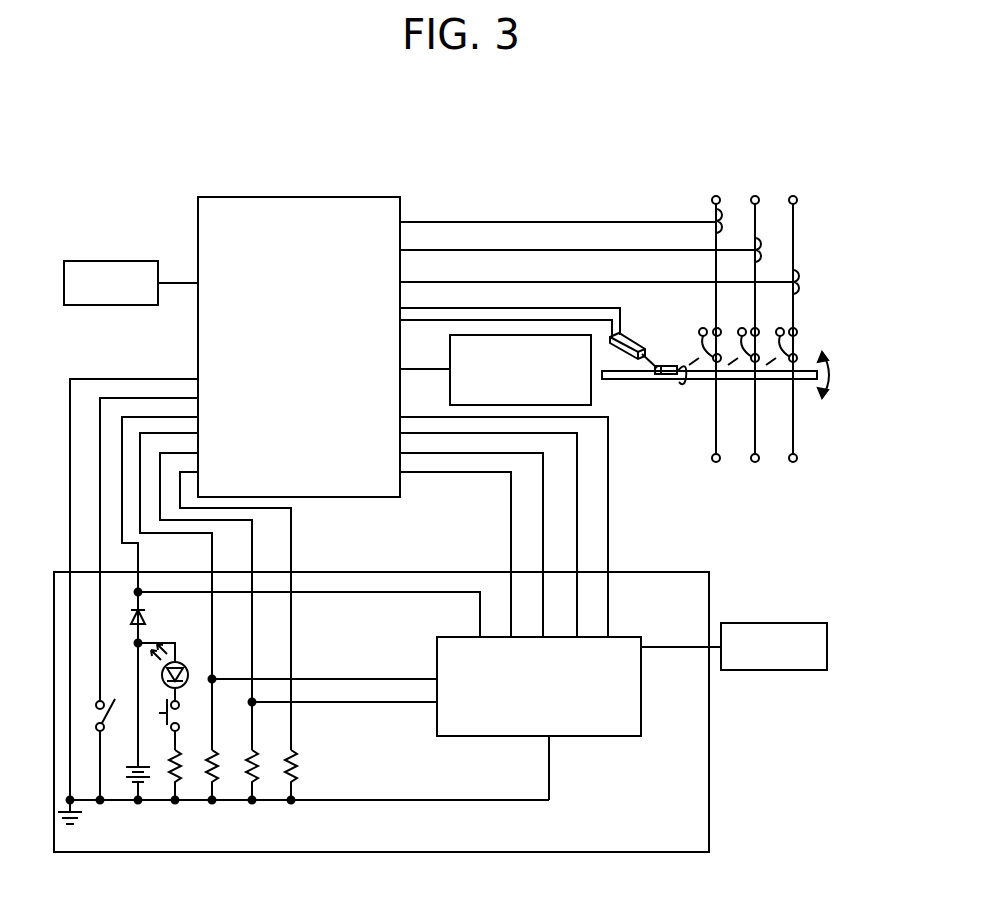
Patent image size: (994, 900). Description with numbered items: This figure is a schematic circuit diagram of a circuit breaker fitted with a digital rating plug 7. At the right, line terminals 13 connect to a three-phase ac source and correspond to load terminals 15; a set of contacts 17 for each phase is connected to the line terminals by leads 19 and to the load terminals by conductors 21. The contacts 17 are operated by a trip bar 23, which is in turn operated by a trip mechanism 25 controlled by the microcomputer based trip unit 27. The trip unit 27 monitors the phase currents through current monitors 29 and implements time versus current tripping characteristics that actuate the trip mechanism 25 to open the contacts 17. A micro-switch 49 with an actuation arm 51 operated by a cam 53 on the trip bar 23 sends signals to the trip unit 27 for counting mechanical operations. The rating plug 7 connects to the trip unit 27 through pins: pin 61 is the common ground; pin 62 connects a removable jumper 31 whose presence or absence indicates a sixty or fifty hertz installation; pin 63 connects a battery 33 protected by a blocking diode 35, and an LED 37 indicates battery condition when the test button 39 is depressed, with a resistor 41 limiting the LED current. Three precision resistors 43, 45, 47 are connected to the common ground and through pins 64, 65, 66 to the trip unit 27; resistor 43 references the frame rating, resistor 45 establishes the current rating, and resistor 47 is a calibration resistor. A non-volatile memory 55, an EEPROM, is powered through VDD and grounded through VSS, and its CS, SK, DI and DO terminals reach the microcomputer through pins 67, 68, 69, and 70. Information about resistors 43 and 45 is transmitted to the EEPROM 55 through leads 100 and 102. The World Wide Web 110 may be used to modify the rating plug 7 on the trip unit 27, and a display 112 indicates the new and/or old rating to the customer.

The rating plug 7 is at (709, 746).
The line terminals 13 is at (793, 196).
The load terminals 15 is at (791, 454).
The contacts 17 is at (779, 328).
The leads 19 is at (795, 305).
The conductors 21 is at (795, 430).
The trip bar 23 is at (652, 380).
The trip mechanism 25 is at (450, 361).
The microcomputer based trip unit 27 is at (198, 241).
The current monitors 29 is at (798, 276).
The removable jumper 31 is at (108, 711).
The battery 33 is at (130, 774).
The blocking diode 35 is at (129, 618).
The LED 37 is at (184, 663).
The test button 39 is at (162, 711).
The resistor 41 is at (170, 776).
The precision resistor 43 is at (207, 776).
The precision resistor 45 is at (247, 776).
The calibration resistor 47 is at (296, 776).
The micro-switch 49 is at (632, 334).
The actuation arm 51 is at (660, 365).
The cam 53 is at (681, 380).
The non-volatile memory 55 is at (592, 737).
The pin 61 is at (121, 589).
The pin 62 is at (136, 549).
The pin 63 is at (154, 513).
The pin 64 is at (176, 591).
The pin 65 is at (206, 601).
The pin 66 is at (235, 611).
The pin 67 is at (455, 554).
The pin 68 is at (471, 545).
The pin 69 is at (488, 535).
The pin 70 is at (504, 527).
The lead 100 is at (353, 678).
The lead 102 is at (370, 704).
The World Wide Web 110 is at (104, 261).
The display 112 is at (773, 623).